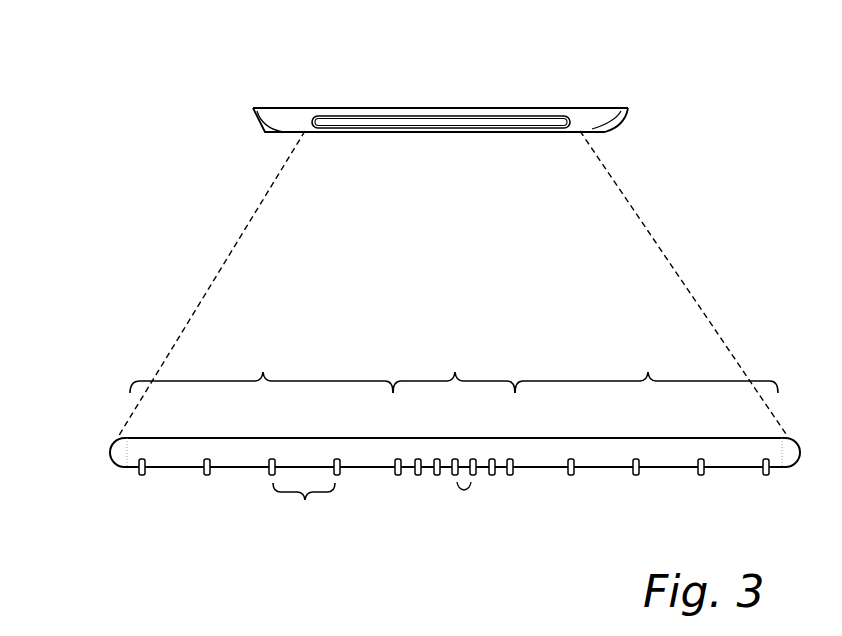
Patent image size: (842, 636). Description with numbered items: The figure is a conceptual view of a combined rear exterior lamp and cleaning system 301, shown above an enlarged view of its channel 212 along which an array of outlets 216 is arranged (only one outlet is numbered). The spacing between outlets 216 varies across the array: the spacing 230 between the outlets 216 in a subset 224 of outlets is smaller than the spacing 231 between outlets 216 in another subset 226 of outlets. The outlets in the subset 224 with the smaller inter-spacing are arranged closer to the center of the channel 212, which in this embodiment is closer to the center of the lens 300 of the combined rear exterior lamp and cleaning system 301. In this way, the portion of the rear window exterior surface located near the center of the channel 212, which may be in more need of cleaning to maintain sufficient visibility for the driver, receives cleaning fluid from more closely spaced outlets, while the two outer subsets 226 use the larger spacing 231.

The combined rear exterior lamp and cleaning system 301 is at (220, 50).
The lens 300 is at (263, 132).
The channel 212 is at (242, 475).
The subset of outlets 226 is at (454, 472).
The subset of outlets 224 is at (454, 477).
The outlet 216 is at (435, 476).
The spacing 231 is at (305, 518).
The spacing 230 is at (464, 505).